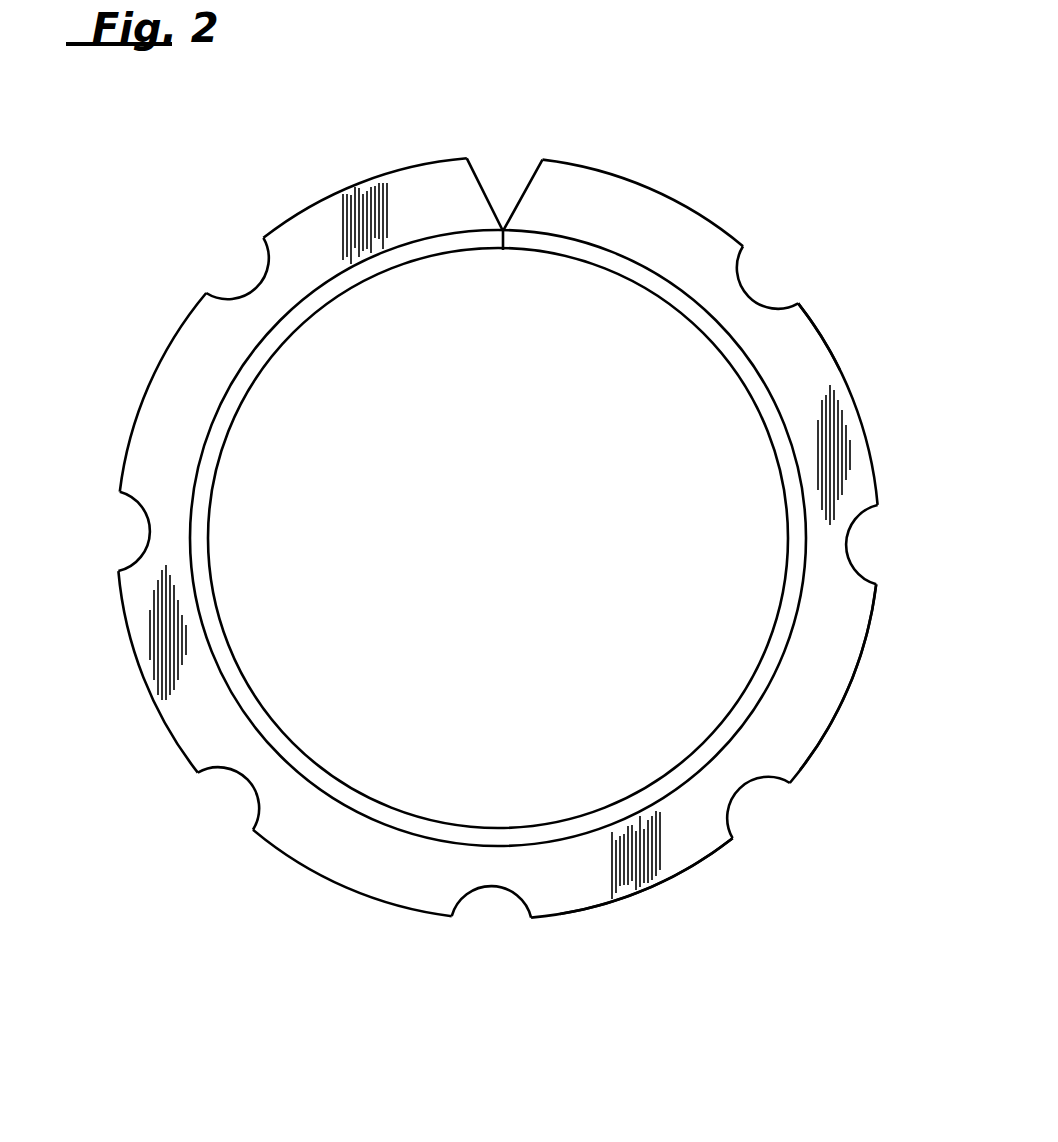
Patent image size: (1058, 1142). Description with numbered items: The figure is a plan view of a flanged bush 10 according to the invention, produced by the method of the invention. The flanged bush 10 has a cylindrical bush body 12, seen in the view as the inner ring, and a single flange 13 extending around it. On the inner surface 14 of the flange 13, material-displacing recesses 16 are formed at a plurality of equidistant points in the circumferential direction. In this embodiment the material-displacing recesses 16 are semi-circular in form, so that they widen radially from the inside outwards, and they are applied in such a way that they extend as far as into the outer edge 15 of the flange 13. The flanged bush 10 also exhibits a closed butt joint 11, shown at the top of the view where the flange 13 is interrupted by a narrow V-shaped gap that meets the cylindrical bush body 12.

The flanged bush 10 is at (675, 181).
The closed butt joint 11 is at (502, 255).
The cylindrical bush body 12 is at (797, 492).
The flange 13 is at (828, 370).
The inner surface of the flange 14 is at (817, 698).
The outer edge of the flange 15 is at (606, 916).
The material-displacing recesses 16 is at (488, 907).